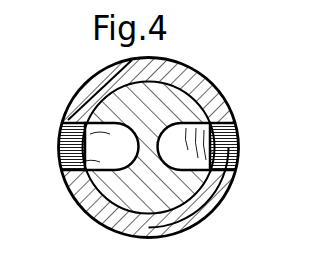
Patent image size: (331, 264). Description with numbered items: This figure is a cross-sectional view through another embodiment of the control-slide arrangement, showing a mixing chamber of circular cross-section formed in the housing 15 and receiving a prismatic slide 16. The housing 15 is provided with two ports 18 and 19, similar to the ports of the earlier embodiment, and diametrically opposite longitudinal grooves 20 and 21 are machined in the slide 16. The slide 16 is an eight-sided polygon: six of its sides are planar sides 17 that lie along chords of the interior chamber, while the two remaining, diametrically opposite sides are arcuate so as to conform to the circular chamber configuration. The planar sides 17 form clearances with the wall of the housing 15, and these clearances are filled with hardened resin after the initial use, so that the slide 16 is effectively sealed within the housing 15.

The housing 15 is at (198, 87).
The prismatic slide 16 is at (204, 104).
The planar sides 17 is at (166, 68).
The port 18 is at (73, 158).
The port 19 is at (222, 158).
The longitudinal groove 20 is at (82, 137).
The longitudinal groove 21 is at (222, 133).